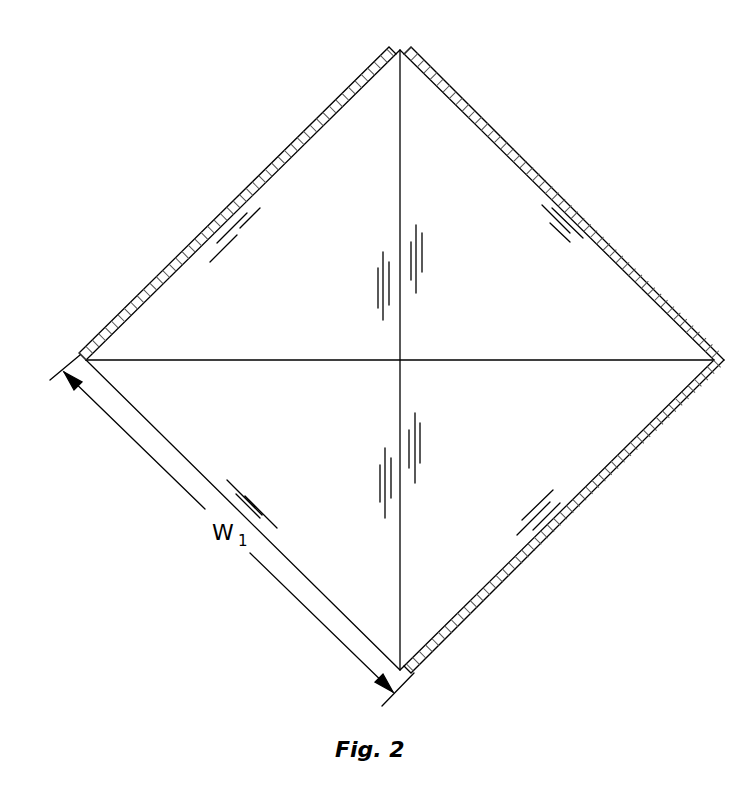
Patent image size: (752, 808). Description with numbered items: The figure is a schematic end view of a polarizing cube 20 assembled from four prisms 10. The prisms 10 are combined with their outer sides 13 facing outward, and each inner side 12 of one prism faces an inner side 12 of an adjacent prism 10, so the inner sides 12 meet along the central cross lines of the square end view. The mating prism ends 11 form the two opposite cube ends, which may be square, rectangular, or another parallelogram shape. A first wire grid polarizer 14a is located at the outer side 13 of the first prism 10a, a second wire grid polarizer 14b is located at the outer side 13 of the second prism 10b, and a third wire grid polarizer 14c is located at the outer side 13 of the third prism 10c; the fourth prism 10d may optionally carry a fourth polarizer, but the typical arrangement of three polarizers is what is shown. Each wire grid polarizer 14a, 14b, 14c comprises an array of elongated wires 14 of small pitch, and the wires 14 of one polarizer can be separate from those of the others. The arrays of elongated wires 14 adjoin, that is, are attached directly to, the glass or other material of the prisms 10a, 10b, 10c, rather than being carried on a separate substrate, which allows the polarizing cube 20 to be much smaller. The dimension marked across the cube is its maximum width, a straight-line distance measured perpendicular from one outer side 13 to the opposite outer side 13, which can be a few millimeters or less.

The polarizing cube 20 is at (150, 75).
The prism 10 is at (417, 92).
The first prism 10a is at (360, 335).
The second prism 10b is at (443, 335).
The third prism 10c is at (442, 388).
The fourth prism 10d is at (361, 388).
The prism end 11 is at (407, 357).
The inner side 12 is at (227, 360).
The outer side 13 is at (273, 181).
The wire grid polarizer 14 is at (401, 360).
The first wire grid polarizer 14a is at (211, 222).
The second wire grid polarizer 14b is at (577, 206).
The third wire grid polarizer 14c is at (603, 479).